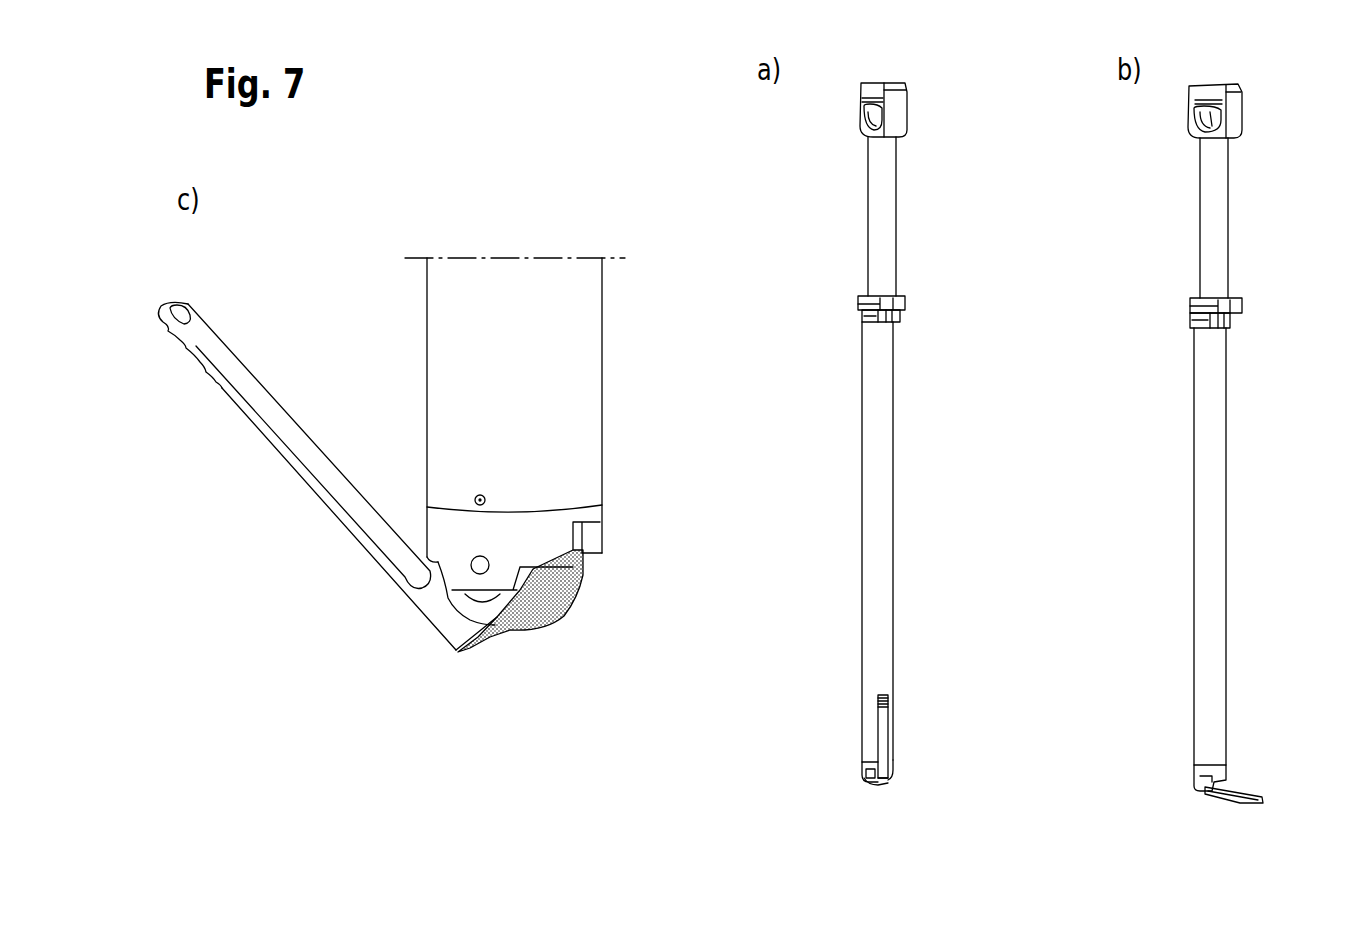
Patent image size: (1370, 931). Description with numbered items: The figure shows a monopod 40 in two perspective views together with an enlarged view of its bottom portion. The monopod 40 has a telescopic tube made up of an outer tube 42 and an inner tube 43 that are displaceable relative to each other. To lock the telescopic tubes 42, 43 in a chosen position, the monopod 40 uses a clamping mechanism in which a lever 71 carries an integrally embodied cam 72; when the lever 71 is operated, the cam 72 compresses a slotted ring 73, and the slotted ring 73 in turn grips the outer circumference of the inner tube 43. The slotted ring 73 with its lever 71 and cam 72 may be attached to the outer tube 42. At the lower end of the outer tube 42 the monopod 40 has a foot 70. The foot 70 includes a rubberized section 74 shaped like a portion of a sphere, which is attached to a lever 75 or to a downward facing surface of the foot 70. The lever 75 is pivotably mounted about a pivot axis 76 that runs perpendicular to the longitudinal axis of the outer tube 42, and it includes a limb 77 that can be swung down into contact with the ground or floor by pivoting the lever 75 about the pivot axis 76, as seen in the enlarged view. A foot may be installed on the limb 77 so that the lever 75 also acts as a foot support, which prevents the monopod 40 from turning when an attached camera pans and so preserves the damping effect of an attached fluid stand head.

The monopod 40 is at (962, 388).
The outer tube 42 is at (877, 555).
The inner tube 43 is at (880, 233).
The distal tip assembly 70 is at (828, 780).
The lever 71 is at (1190, 312).
The cam 72 is at (858, 308).
The slotted ring 73 is at (905, 302).
The rubberized section 74 is at (869, 784).
The lever 75 is at (900, 778).
The pivot axis 76 is at (1195, 778).
The limb 77 is at (882, 728).